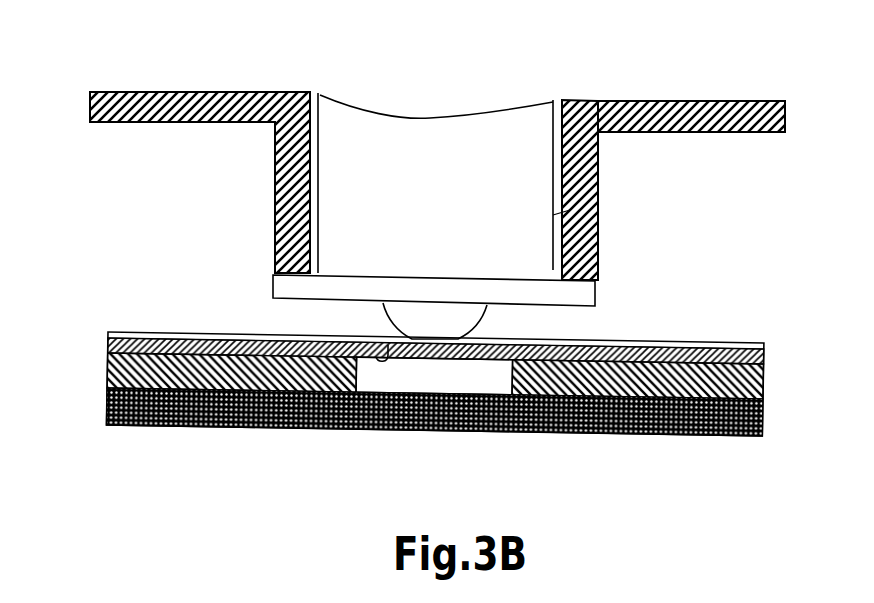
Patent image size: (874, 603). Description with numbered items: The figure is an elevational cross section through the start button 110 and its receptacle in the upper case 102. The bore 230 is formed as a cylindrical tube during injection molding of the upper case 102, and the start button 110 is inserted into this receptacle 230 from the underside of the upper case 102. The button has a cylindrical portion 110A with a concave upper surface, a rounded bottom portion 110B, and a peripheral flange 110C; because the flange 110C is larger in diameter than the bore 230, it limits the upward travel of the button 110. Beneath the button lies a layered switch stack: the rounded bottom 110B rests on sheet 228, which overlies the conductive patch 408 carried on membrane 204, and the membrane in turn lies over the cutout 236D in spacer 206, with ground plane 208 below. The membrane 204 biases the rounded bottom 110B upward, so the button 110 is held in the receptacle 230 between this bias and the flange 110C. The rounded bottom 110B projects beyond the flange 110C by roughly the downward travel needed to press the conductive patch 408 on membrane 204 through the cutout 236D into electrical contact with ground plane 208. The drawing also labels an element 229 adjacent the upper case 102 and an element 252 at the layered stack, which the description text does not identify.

The upper case 102 is at (225, 92).
The start button 110 is at (355, 140).
The cylindrical portion 110A is at (598, 192).
The rounded bottom portion 110B is at (465, 113).
The peripheral flange 110C is at (585, 297).
The bore (receptacle) 230 is at (560, 100).
The flange 229 is at (655, 101).
The sheet 228 is at (160, 337).
The membrane 204 is at (108, 342).
The spacer 206 is at (108, 365).
The ground plane 208 is at (108, 390).
The substrate stack 252 is at (764, 431).
The cutout 236D is at (427, 378).
The conductive patch (start point) 408 is at (388, 345).